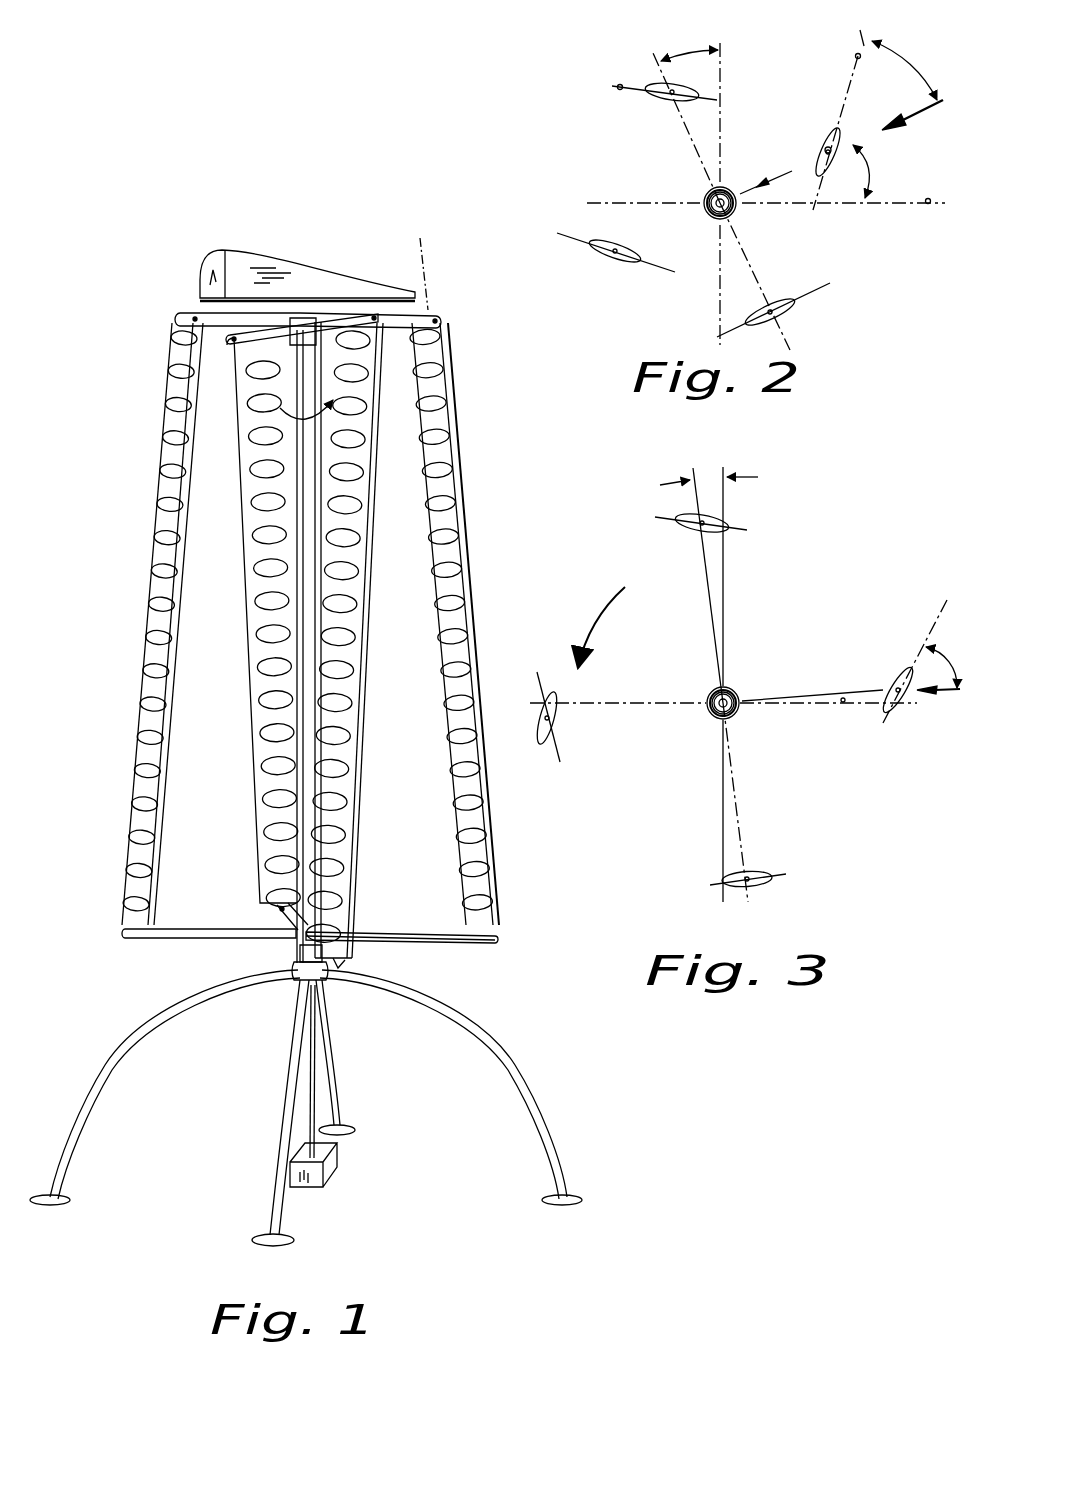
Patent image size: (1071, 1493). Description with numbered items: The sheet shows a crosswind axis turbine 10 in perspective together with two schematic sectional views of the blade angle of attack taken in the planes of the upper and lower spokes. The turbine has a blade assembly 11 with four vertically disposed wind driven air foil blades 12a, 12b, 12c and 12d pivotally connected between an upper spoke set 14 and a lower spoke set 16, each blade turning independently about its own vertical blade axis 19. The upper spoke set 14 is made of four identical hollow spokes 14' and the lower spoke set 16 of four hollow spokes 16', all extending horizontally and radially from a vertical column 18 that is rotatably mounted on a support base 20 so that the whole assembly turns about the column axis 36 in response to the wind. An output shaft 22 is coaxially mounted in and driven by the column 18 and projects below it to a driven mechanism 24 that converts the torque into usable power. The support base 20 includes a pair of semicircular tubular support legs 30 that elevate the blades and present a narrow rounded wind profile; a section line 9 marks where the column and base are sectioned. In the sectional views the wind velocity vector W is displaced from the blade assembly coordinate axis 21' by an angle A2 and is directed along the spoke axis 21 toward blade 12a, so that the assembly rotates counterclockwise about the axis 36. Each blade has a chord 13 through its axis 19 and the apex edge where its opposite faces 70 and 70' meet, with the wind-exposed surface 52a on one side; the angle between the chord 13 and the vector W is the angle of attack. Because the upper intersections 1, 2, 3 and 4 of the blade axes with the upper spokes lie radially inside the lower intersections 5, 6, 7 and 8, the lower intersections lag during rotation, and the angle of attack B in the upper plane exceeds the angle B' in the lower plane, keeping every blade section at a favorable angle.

In FIG. 1, the crosswind axis turbine 10 is at (61, 638).
In FIG. 1, the blade assembly 11 is at (128, 458).
In FIG. 1, the air foil blade 12a is at (468, 624).
In FIG. 2, the air foil blade 12a is at (826, 176).
In FIG. 2, the air foil blade 12b is at (673, 94).
In FIG. 1, the air foil blade 12c is at (173, 626).
In FIG. 2, the air foil blade 12c is at (613, 260).
In FIG. 1, the air foil blade 12d is at (369, 645).
In FIG. 2, the air foil blade 12d is at (788, 311).
In FIG. 2, the blade chord 13 is at (618, 86).
In FIG. 1, the upper spoke set 14 is at (335, 273).
In FIG. 1, the upper spoke 14' is at (299, 292).
In FIG. 1, the lower spoke set 16 is at (325, 977).
In FIG. 1, the lower spoke 16' is at (400, 910).
In FIG. 1, the vertical column 18 is at (312, 487).
In FIG. 2, the vertical column 18 is at (707, 210).
In FIG. 3, the vertical column 18 is at (713, 710).
In FIG. 1, the blade axis 19 is at (421, 250).
In FIG. 2, the blade axis 19 is at (827, 147).
In FIG. 1, the support base 20 is at (306, 1095).
In FIG. 2, the longitudinal axis of upper spoke 21 is at (760, 174).
In FIG. 2, the blade assembly coordinate axis 21' is at (936, 228).
In FIG. 3, the blade assembly coordinate axis 21' is at (828, 724).
In FIG. 1, the output shaft 22 is at (317, 1096).
In FIG. 1, the driven mechanism 24 is at (331, 1166).
In FIG. 1, the tubular support leg 30 is at (98, 1074).
In FIG. 2, the vertical axis of column 36 is at (737, 208).
In FIG. 3, the vertical axis of column 36 is at (732, 691).
In FIG. 2, the blade surface 52a is at (678, 96).
In FIG. 2, the blade face 70 is at (802, 133).
In FIG. 2, the blade face 70' is at (872, 205).
In FIG. 2, the intersection 1 is at (820, 158).
In FIG. 1, the intersection 2 is at (132, 280).
In FIG. 2, the intersection 2 is at (680, 96).
In FIG. 1, the intersection 3 is at (77, 861).
In FIG. 2, the intersection 3 is at (615, 250).
In FIG. 2, the intersection 4 is at (770, 310).
In FIG. 3, the intersection 5 is at (894, 684).
In FIG. 3, the intersection 6 is at (706, 524).
In FIG. 3, the intersection 7 is at (551, 716).
In FIG. 3, the intersection 8 is at (749, 876).
In FIG. 1, the section line 9 is at (360, 203).
In FIG. 2, the angle A2 is at (867, 167).
In FIG. 2, the angle of attack B is at (900, 65).
In FIG. 3, the angle of attack B' is at (944, 652).
In FIG. 2, the wind velocity vector W is at (923, 102).
In FIG. 3, the wind velocity vector W is at (942, 702).